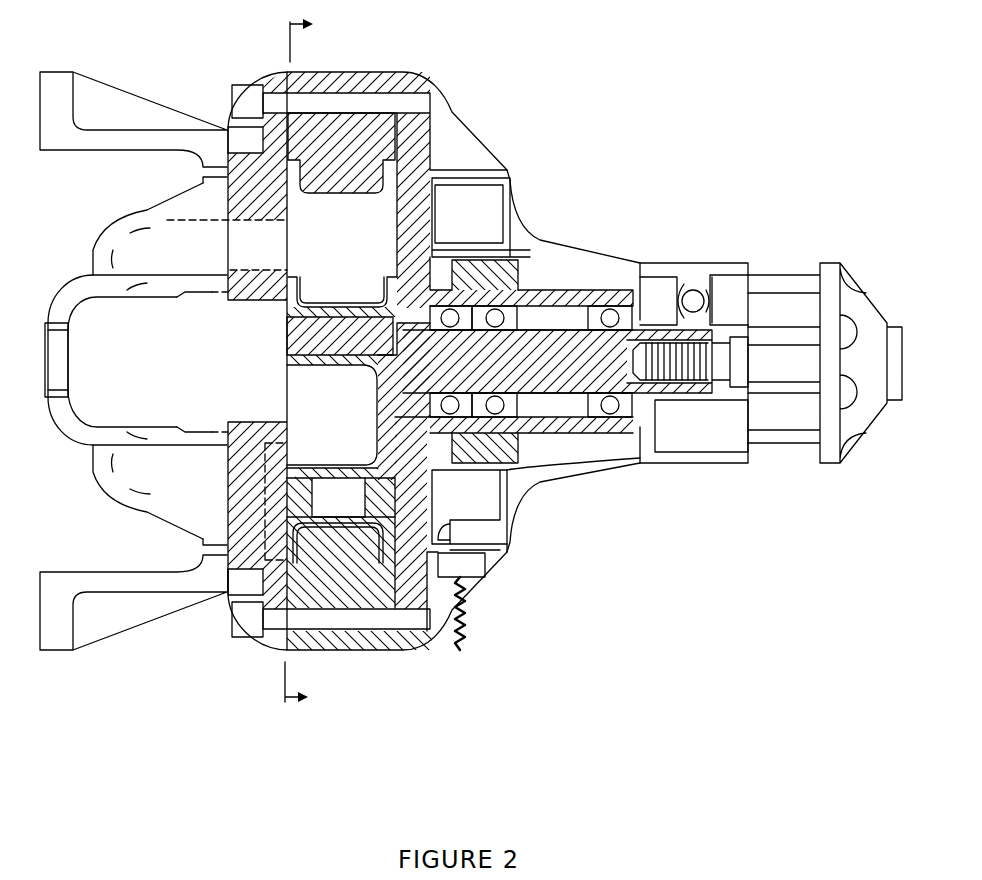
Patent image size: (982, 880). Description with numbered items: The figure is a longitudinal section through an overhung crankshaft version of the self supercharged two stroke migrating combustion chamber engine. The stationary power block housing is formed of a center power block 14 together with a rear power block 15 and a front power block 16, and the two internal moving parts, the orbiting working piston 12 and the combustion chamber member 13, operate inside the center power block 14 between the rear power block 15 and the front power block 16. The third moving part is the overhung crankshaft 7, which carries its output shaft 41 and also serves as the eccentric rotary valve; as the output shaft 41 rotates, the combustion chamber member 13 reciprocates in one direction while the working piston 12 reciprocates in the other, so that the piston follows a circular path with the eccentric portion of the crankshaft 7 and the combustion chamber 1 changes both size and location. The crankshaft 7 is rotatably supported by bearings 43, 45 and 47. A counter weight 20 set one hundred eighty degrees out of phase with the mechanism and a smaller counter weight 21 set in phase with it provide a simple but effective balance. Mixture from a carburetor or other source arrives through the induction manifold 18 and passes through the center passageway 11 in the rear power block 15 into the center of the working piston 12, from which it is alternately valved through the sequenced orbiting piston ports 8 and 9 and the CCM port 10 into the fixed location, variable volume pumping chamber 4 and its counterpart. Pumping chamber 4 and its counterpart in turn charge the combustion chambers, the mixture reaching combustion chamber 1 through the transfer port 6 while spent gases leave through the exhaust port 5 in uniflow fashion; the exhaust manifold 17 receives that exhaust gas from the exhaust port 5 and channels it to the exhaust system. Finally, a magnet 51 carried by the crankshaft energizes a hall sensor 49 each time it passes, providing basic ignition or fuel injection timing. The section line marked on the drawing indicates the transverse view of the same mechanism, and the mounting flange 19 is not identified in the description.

The combustion chamber 1 is at (309, 362).
The pumping chamber 4 is at (380, 217).
The exhaust port 5 is at (267, 247).
The transfer port 6 is at (275, 468).
The crankshaft 7 is at (443, 472).
The orbiting piston port 8 is at (340, 497).
The orbiting piston port 9 is at (338, 497).
The CCM port 10 is at (340, 523).
The center passageway 11 is at (305, 400).
The working piston 12 is at (340, 327).
The combustion chamber member 13 is at (307, 313).
The center power block 14 is at (380, 130).
The rear power block 15 is at (267, 115).
The front power block 16 is at (427, 153).
The exhaust manifold 17 is at (163, 247).
The induction manifold 18 is at (133, 320).
The mounting flange 19 is at (113, 580).
The counter weight 20 is at (493, 217).
The smaller counter weight 21 is at (709, 432).
The output shaft 41 is at (575, 361).
The bearing 43 is at (610, 317).
The bearing 45 is at (497, 313).
The bearing 47 is at (404, 401).
The hall sensor 49 is at (467, 565).
The magnet 51 is at (465, 528).